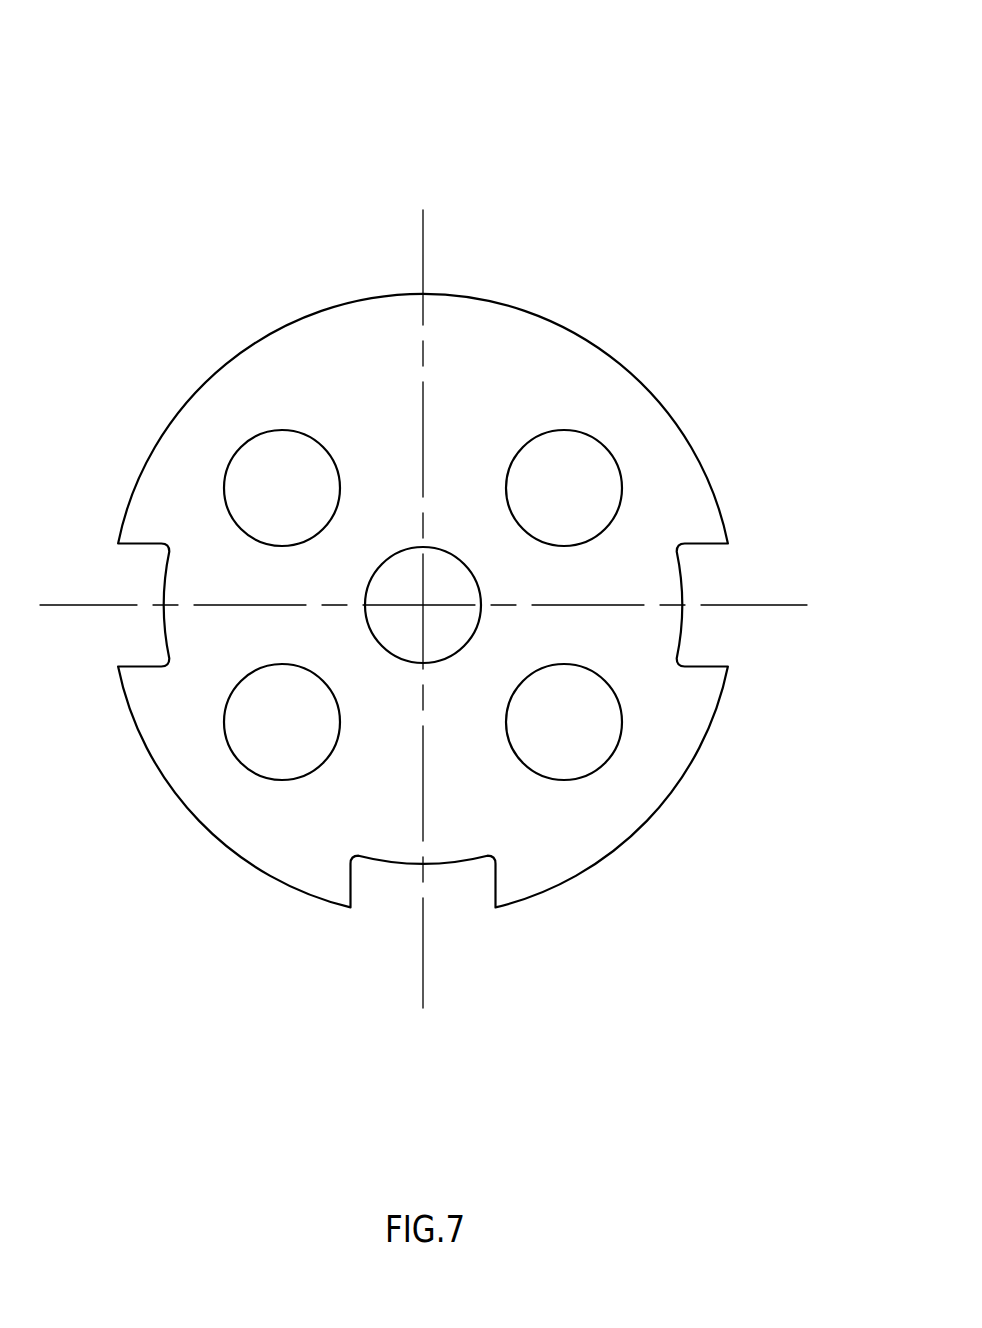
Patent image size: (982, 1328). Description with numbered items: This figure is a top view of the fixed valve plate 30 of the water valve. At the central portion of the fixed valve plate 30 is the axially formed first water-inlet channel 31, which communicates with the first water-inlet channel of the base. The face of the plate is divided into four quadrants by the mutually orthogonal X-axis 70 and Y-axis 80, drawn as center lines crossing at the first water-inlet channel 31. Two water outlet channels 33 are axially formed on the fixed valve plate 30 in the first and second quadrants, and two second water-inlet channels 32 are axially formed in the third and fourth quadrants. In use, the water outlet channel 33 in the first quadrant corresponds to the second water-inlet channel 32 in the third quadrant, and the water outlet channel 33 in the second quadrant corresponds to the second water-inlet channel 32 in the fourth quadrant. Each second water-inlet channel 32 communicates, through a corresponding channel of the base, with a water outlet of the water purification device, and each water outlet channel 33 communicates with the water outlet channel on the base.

The fixed valve plate 30 is at (518, 300).
The first water-inlet channel 31 is at (407, 627).
The second water-inlet channel 32 is at (252, 732).
The water outlet channel 33 is at (262, 467).
The X-axis 70 is at (755, 607).
The Y-axis 80 is at (423, 247).